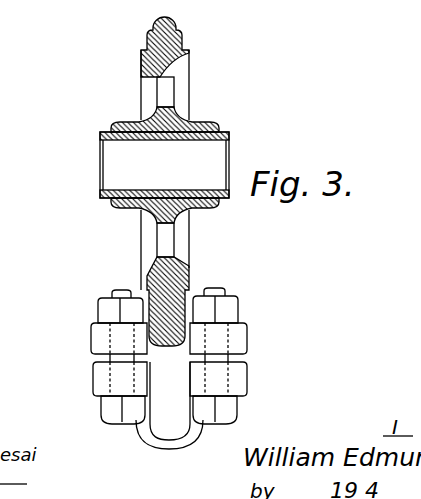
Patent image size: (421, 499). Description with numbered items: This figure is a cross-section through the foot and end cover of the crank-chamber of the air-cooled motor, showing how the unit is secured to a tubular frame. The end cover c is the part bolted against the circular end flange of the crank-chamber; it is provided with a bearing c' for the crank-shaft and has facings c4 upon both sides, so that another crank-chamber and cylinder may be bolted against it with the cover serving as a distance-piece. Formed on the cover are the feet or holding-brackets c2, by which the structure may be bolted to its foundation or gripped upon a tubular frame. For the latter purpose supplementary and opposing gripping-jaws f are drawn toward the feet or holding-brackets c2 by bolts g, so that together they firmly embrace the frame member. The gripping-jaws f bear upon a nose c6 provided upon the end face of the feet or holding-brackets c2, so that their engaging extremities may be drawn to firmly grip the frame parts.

The facings c4 is at (202, 33).
The end cover c is at (183, 165).
The bearing c' is at (172, 160).
The feet or holding-brackets c2 is at (158, 289).
The nose c6 is at (136, 363).
The bolts g is at (107, 305).
The gripping-jaws f is at (165, 422).